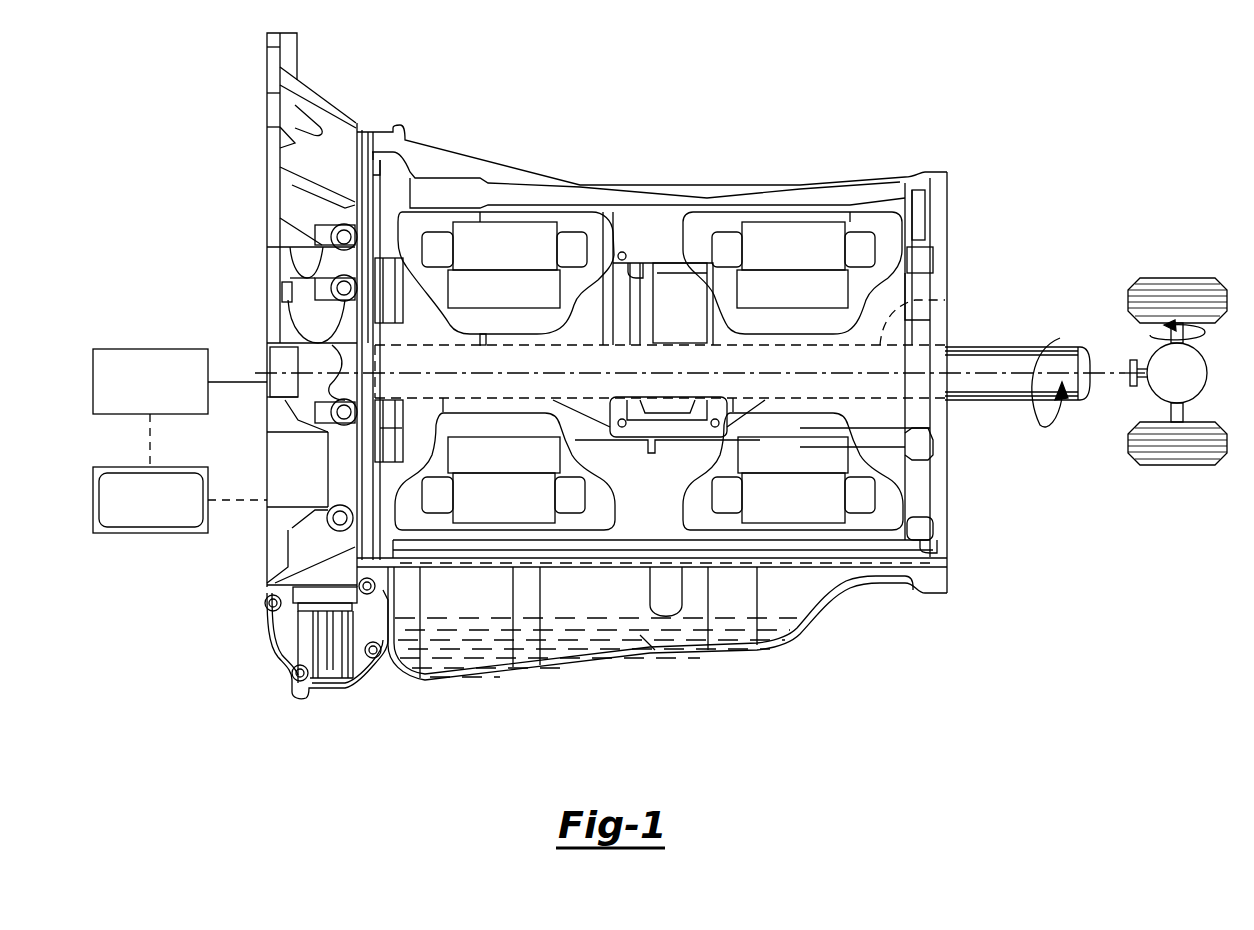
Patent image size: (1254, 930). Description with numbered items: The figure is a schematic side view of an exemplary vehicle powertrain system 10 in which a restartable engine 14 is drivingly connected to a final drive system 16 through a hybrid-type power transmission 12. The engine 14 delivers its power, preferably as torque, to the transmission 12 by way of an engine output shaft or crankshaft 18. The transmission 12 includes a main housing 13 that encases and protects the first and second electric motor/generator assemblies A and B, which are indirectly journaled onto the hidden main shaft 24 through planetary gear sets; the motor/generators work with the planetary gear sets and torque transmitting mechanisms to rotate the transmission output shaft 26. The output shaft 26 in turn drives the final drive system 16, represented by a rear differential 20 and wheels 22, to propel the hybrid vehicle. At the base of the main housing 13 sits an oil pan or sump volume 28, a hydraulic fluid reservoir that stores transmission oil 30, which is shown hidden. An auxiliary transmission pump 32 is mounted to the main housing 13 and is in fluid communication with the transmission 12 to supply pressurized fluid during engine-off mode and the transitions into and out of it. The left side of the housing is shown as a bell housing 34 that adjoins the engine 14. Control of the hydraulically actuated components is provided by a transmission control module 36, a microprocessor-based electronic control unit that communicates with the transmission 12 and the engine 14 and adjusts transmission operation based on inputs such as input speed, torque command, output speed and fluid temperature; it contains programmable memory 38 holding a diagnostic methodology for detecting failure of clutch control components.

The vehicle powertrain system 10 is at (873, 72).
The hybrid-type power transmission 12 is at (570, 125).
The main housing 13 is at (800, 185).
The restartable engine 14 is at (150, 349).
The final drive system 16 is at (1195, 240).
The engine output shaft 18 is at (230, 382).
The rear differential 20 is at (1160, 388).
The wheels 22 is at (1128, 300).
The main shaft 24 is at (950, 300).
The transmission output shaft 26 is at (988, 400).
The oil pan 28 is at (580, 668).
The transmission oil 30 is at (660, 676).
The auxiliary transmission pump 32 is at (283, 628).
The bell housing 34 is at (315, 92).
The transmission control module 36 is at (122, 533).
The programmable memory 38 is at (176, 527).